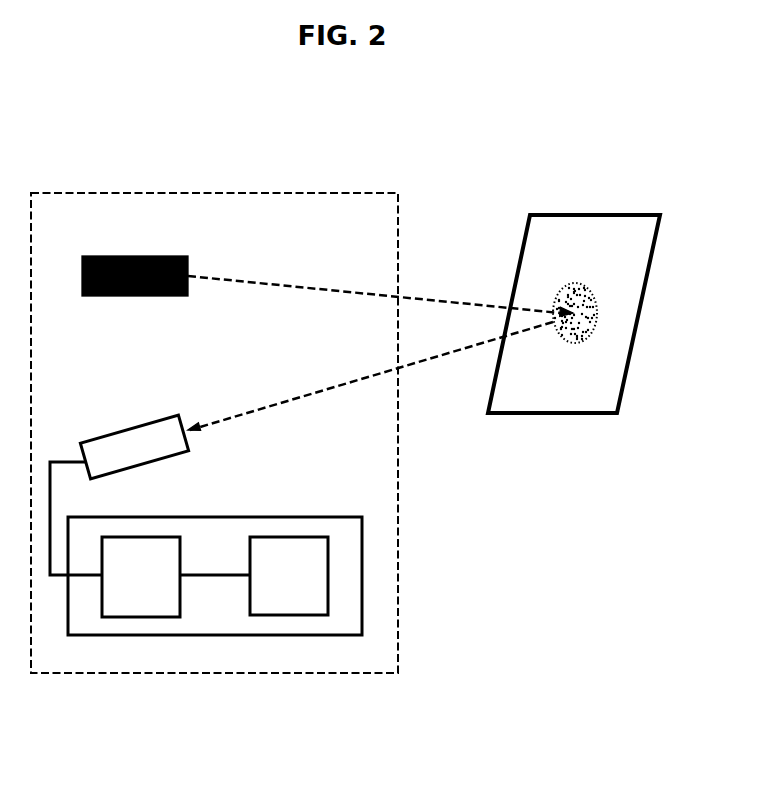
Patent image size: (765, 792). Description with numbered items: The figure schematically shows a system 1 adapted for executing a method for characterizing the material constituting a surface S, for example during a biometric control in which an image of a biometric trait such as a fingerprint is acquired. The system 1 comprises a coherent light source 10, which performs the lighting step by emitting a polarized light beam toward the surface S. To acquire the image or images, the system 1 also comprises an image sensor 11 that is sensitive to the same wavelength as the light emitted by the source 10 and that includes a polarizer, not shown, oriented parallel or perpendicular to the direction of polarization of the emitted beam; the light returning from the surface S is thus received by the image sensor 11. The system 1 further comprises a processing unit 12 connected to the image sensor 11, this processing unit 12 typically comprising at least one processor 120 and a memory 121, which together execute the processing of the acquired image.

The system 1 is at (207, 376).
The coherent light source 10 is at (135, 296).
The image sensor 11 is at (124, 457).
The processing unit 12 is at (204, 561).
The processor 120 is at (124, 588).
The memory 121 is at (272, 585).
The surface S is at (572, 272).